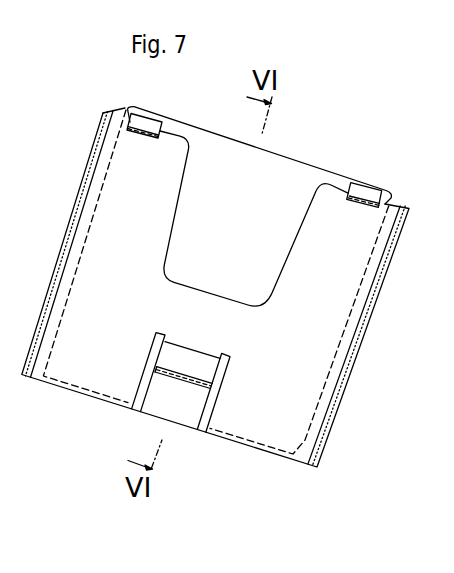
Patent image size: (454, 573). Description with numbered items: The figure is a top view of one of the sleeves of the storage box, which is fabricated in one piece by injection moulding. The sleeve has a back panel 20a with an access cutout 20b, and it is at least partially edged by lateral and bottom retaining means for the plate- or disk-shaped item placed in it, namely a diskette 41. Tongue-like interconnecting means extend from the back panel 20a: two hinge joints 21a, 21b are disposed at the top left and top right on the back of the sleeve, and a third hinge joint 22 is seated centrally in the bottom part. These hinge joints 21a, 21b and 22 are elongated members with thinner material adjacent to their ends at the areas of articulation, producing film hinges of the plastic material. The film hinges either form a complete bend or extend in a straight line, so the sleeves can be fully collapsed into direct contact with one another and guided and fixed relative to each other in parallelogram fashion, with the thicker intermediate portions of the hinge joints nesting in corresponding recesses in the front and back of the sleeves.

The back panel 20a is at (270, 427).
The access cutout 20b is at (289, 252).
The diskette 41 is at (301, 175).
The hinge joint 21a is at (153, 128).
The hinge joint 21b is at (349, 200).
The third hinge joint 22 is at (193, 378).